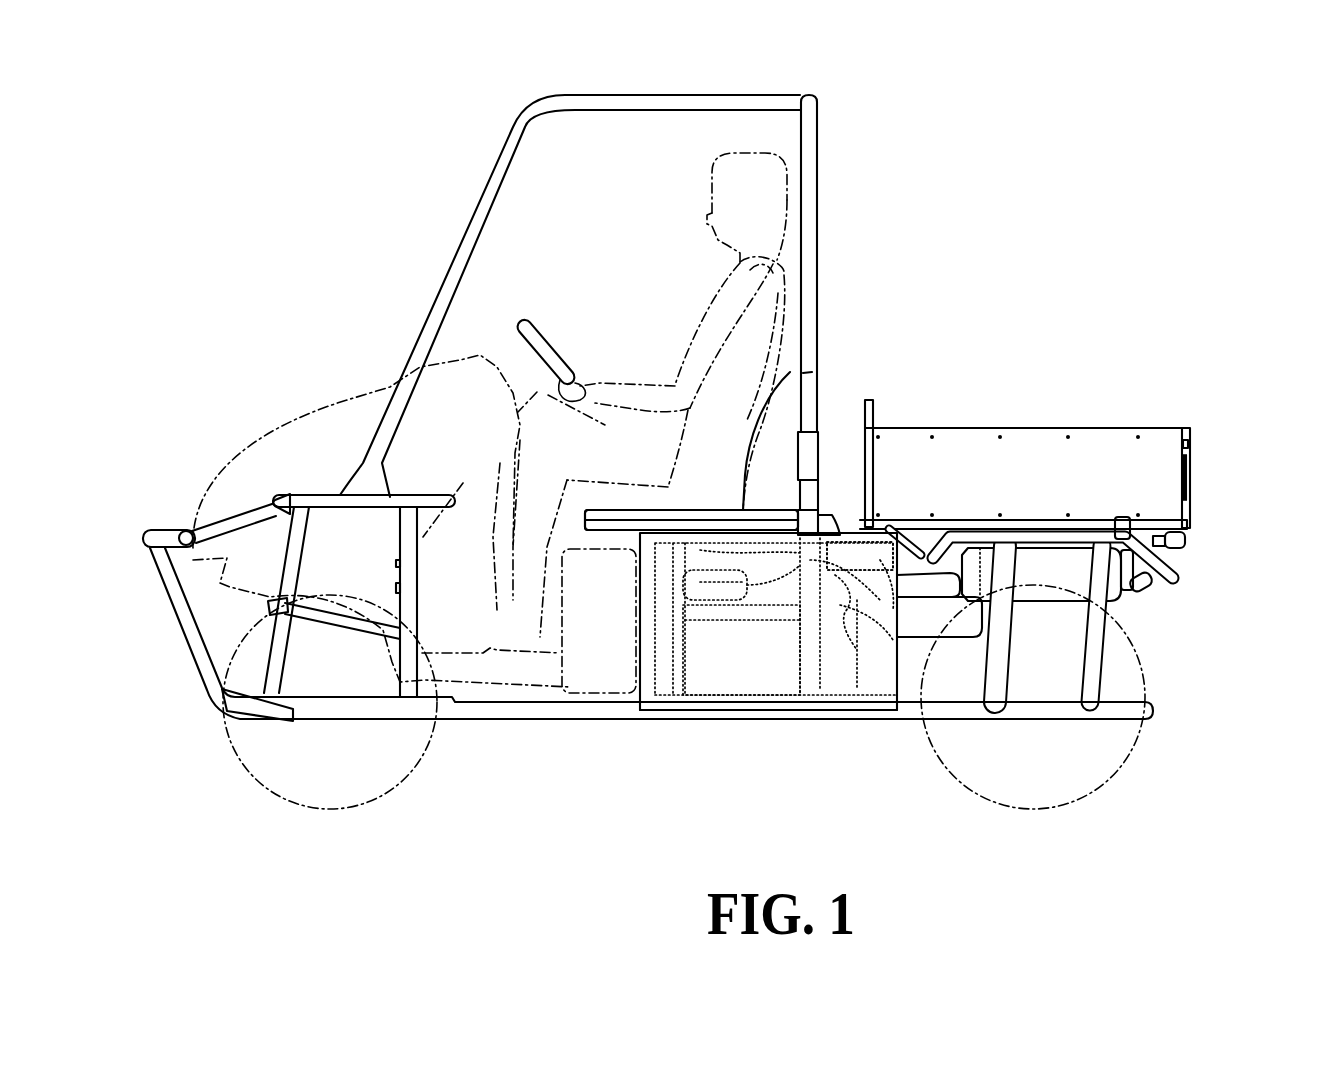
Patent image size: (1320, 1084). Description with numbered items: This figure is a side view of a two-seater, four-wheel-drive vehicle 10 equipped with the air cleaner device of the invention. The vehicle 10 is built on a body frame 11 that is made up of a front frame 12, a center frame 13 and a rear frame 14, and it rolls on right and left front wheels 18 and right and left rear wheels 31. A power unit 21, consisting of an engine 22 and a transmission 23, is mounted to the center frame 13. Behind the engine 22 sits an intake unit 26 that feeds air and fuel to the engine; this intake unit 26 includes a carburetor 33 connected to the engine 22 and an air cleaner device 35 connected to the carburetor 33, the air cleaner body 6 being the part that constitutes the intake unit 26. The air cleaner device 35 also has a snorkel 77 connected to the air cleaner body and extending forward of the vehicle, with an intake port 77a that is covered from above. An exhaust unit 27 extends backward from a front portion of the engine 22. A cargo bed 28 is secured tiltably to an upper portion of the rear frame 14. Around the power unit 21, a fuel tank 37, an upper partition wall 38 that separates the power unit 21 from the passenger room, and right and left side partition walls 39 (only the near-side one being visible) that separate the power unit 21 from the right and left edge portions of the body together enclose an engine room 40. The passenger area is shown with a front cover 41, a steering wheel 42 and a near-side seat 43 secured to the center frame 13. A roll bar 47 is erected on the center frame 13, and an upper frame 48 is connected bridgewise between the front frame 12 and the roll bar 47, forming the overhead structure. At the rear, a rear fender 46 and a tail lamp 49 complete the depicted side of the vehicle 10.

The vehicle 10 is at (255, 157).
The body frame 11 is at (571, 723).
The front frame 12 is at (302, 490).
The center frame 13 is at (666, 727).
The rear frame 14 is at (1110, 659).
The front wheels 18 is at (231, 748).
The power unit 21 is at (832, 697).
The engine 22 is at (770, 550).
The transmission 23 is at (755, 672).
The intake unit 26 is at (846, 550).
The air cleaner body 6 is at (846, 550).
The exhaust unit 27 is at (1046, 606).
The cargo bed 28 is at (1090, 418).
The rear wheels 31 is at (1112, 778).
The carburetor 33 is at (844, 582).
The air cleaner device 35 is at (932, 602).
The fuel tank 37 is at (612, 693).
The upper partition wall 38 is at (772, 542).
The side partition wall 39 is at (698, 720).
The engine room 40 is at (738, 733).
The front cover 41 is at (341, 393).
The steering wheel 42 is at (548, 330).
The seat 43 is at (812, 372).
The rear fender 46 is at (1177, 577).
The roll bar 47 is at (820, 241).
The upper frame 48 is at (466, 237).
The tail lamp 49 is at (1185, 540).
The snorkel 77 is at (682, 552).
The intake port 77a is at (652, 521).